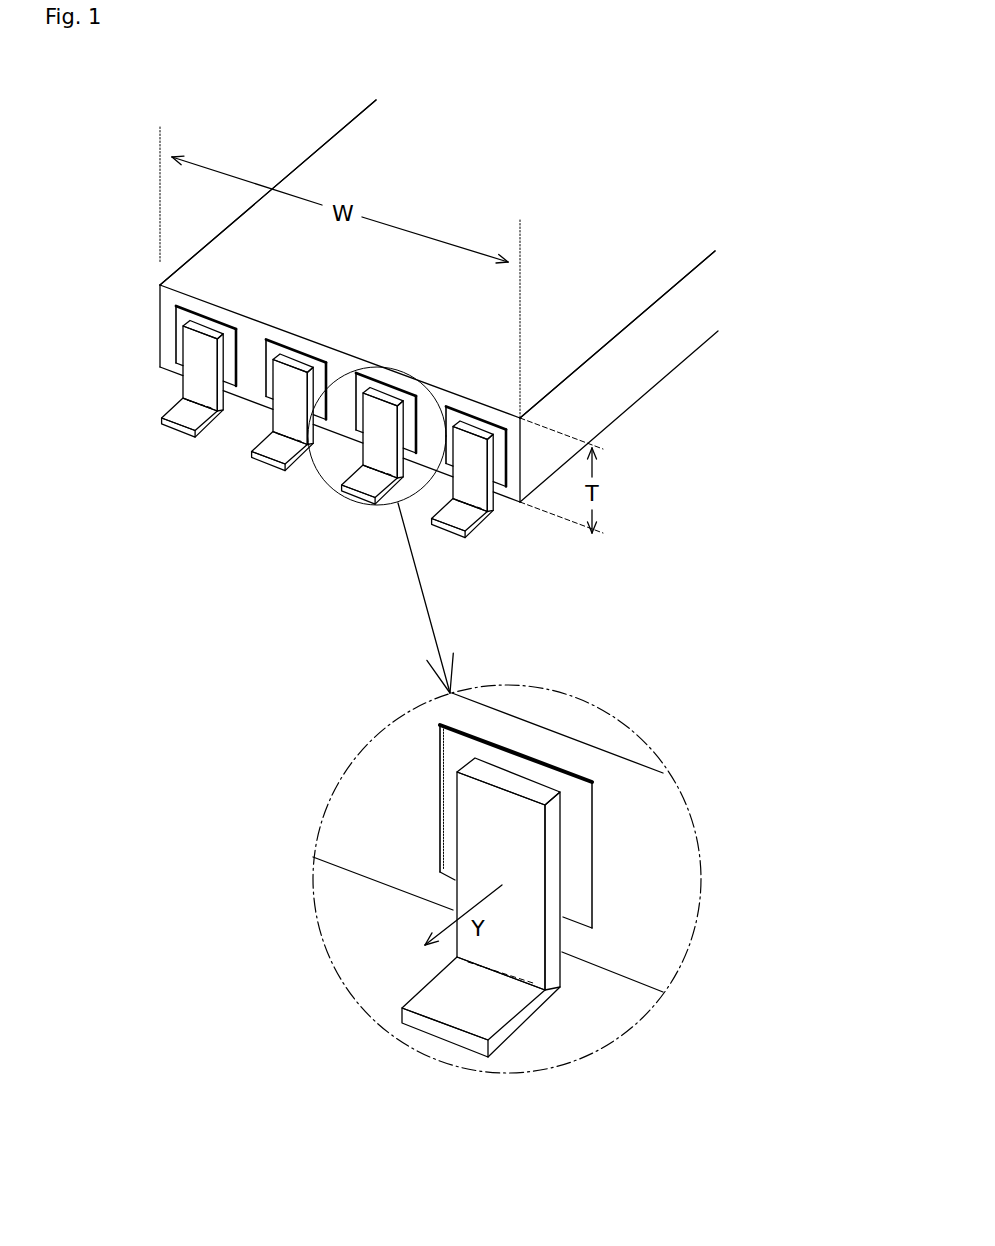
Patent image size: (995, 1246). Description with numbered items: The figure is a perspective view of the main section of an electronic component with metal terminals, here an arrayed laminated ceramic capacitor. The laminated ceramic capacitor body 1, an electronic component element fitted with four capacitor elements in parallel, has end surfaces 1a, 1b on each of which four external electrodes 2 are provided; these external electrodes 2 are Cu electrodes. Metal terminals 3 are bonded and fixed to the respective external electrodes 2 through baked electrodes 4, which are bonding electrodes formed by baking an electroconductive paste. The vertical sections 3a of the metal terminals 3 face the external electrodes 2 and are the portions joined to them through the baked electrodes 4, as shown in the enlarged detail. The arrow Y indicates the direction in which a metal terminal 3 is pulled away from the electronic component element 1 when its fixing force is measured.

The laminated ceramic capacitor body 1 is at (297, 152).
The end surface 1a is at (250, 383).
The end surface 1b is at (437, 408).
The external electrode 2 is at (185, 308).
The metal terminal 3 is at (165, 425).
The vertical section 3a is at (378, 415).
The baked electrode 4 is at (405, 396).